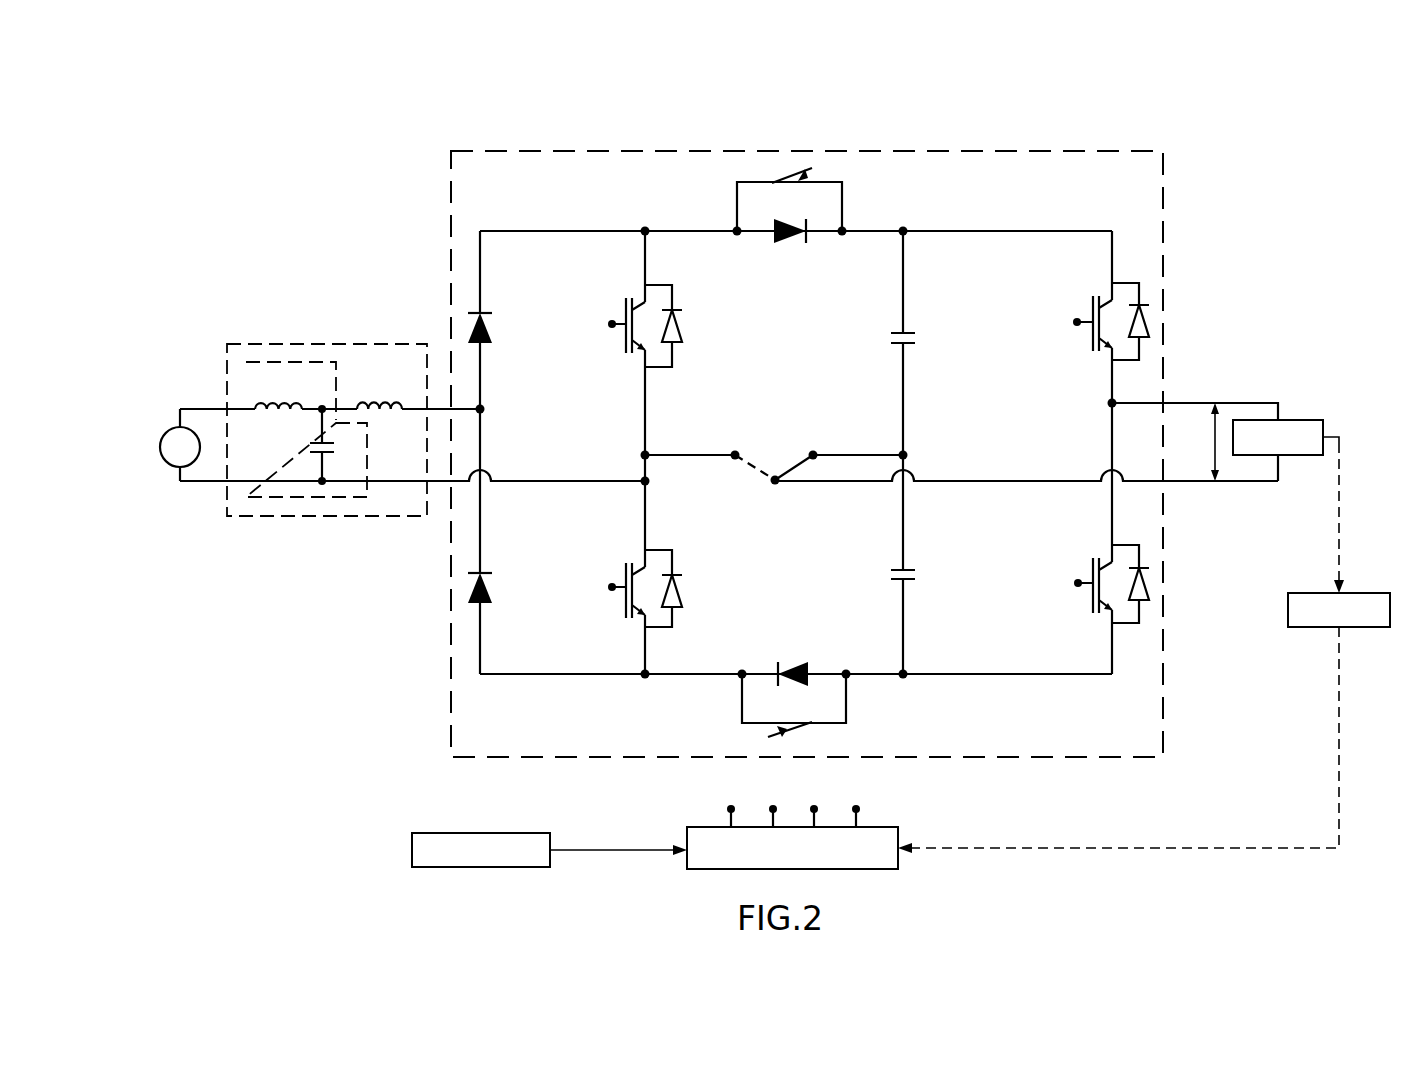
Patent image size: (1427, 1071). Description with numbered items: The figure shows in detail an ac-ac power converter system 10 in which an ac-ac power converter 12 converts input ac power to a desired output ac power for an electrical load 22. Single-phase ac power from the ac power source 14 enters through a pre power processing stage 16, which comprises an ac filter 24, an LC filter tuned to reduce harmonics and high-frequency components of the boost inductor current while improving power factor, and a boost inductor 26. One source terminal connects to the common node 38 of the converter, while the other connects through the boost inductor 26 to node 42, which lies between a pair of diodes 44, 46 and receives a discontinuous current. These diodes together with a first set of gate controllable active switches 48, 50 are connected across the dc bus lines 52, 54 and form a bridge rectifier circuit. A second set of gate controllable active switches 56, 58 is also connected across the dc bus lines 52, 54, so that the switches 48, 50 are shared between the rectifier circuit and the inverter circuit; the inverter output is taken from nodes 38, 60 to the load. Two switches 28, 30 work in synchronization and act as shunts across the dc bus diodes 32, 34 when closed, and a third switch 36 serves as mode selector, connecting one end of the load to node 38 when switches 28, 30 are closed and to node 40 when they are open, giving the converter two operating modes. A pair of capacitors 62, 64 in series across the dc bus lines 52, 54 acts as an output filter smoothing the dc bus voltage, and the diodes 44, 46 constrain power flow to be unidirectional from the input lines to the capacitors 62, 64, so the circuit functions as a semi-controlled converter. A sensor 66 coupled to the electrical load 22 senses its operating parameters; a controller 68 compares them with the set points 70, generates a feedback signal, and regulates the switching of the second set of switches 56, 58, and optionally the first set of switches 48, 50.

The ac-ac power converter system 10 is at (226, 882).
The ac-ac power converter 12 is at (997, 150).
The single-phase ac power source 14 is at (180, 427).
The pre power processing stage 16 is at (355, 344).
The electrical load 22 is at (1303, 420).
The ac filter 24 is at (290, 362).
The boost inductor 26 is at (390, 411).
The switch 28 is at (786, 172).
The switch 30 is at (812, 737).
The dc bus diode 32 is at (773, 237).
The dc bus diode 34 is at (810, 666).
The third switch 36 is at (780, 464).
The common node 38 is at (648, 482).
The node 40 is at (906, 456).
The node 42 is at (484, 411).
The diode 44 is at (484, 350).
The diode 46 is at (485, 605).
The gate controllable active switch 48 is at (611, 291).
The gate controllable active switch 50 is at (613, 553).
The dc bus line 52 is at (530, 231).
The dc bus line 54 is at (552, 675).
The gate controllable active switch 56 is at (1071, 286).
The gate controllable active switch 58 is at (1075, 550).
The node 60 is at (1110, 404).
The capacitor 62 is at (913, 333).
The capacitor 64 is at (914, 570).
The sensor 66 is at (1365, 593).
The controller 68 is at (881, 869).
The set points 70 is at (480, 833).